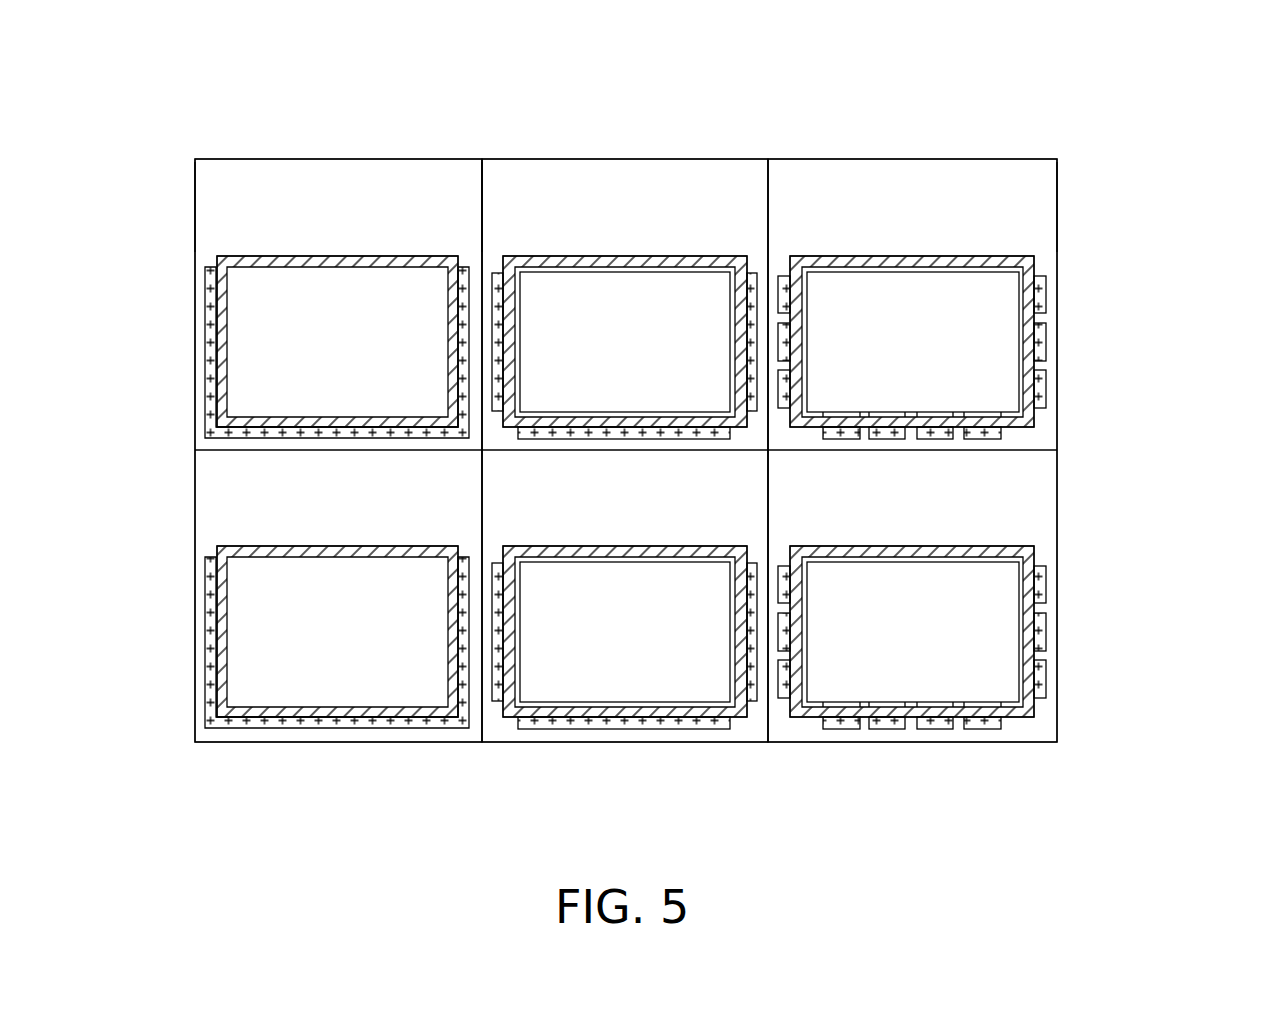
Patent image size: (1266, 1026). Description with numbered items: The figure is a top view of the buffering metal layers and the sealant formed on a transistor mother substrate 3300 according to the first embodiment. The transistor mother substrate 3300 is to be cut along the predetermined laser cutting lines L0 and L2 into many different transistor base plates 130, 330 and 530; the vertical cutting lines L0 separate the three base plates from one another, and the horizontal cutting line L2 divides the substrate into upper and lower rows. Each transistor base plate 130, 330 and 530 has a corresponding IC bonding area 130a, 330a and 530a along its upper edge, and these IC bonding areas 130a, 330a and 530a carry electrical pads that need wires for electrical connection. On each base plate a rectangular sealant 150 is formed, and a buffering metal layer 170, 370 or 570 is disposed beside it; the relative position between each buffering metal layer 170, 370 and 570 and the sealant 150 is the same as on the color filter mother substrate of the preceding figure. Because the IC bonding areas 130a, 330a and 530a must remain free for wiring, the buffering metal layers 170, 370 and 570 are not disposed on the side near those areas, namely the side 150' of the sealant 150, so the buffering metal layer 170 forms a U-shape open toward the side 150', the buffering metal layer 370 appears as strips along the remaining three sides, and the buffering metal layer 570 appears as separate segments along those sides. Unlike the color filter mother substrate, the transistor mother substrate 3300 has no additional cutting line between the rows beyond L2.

The transistor mother substrate 3300 is at (1243, 60).
The transistor base plate 130 is at (284, 148).
The transistor base plate 330 is at (569, 148).
The transistor base plate 530 is at (857, 148).
The IC bonding area 130a is at (195, 162).
The IC bonding area 330a is at (479, 162).
The IC bonding area 530a is at (1058, 162).
The sealant 150 is at (628, 486).
The side of the sealant 150' is at (625, 397).
The buffering metal layer 170 is at (208, 278).
The buffering metal layer 370 is at (752, 272).
The buffering metal layer 570 is at (1045, 340).
The predetermined laser cutting line L0 is at (482, 192).
The predetermined laser cutting line L2 is at (1028, 452).